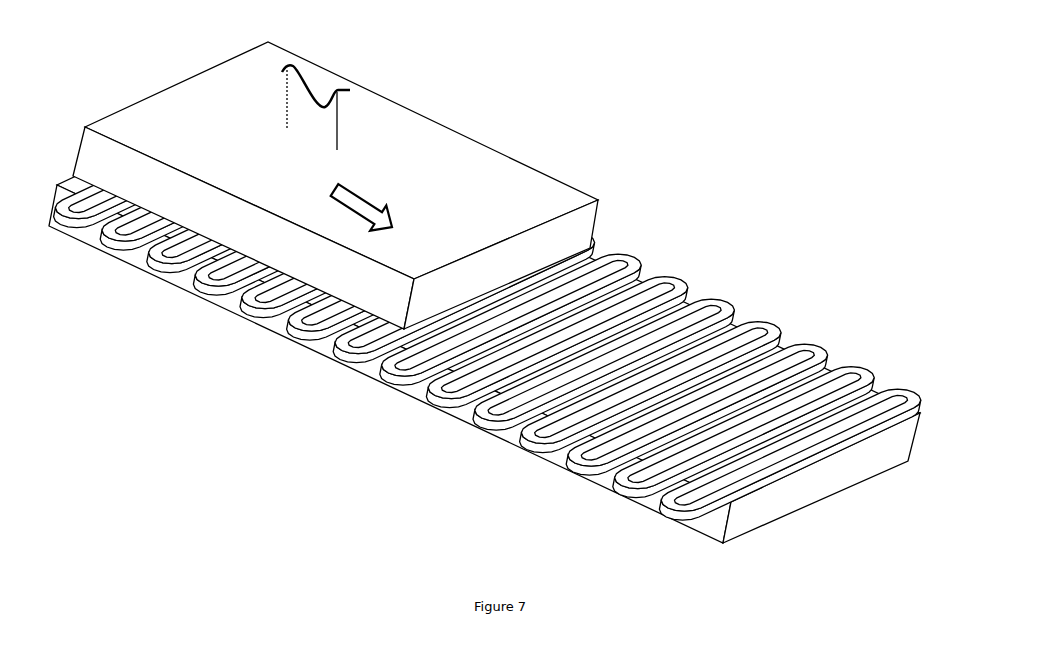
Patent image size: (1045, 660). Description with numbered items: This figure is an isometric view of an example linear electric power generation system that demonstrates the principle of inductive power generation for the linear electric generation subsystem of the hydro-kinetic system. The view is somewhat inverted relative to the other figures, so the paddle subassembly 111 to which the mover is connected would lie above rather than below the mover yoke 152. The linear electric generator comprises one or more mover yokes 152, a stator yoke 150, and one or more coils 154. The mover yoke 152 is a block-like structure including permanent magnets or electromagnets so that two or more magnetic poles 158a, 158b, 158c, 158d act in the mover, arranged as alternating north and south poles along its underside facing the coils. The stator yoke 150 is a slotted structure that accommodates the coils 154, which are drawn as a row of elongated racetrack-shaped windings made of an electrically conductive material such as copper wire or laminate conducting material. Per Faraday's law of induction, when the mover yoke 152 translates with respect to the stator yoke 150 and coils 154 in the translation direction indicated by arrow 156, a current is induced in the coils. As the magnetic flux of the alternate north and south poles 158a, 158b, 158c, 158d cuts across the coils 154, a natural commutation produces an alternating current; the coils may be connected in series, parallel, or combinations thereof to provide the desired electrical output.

The stator yoke 150 is at (714, 528).
The mover yoke 152 is at (187, 68).
The coils 154 is at (634, 258).
The arrow 156 is at (331, 203).
The magnetic pole 158a is at (113, 195).
The magnetic pole 158b is at (195, 232).
The magnetic pole 158c is at (284, 275).
The magnetic pole 158d is at (368, 313).
The paddle subassembly 111 is at (310, 78).